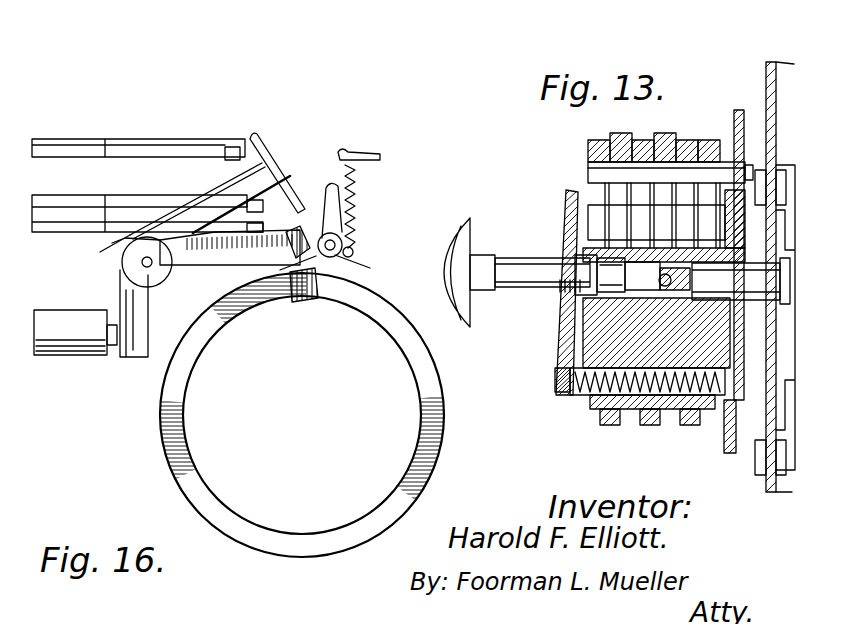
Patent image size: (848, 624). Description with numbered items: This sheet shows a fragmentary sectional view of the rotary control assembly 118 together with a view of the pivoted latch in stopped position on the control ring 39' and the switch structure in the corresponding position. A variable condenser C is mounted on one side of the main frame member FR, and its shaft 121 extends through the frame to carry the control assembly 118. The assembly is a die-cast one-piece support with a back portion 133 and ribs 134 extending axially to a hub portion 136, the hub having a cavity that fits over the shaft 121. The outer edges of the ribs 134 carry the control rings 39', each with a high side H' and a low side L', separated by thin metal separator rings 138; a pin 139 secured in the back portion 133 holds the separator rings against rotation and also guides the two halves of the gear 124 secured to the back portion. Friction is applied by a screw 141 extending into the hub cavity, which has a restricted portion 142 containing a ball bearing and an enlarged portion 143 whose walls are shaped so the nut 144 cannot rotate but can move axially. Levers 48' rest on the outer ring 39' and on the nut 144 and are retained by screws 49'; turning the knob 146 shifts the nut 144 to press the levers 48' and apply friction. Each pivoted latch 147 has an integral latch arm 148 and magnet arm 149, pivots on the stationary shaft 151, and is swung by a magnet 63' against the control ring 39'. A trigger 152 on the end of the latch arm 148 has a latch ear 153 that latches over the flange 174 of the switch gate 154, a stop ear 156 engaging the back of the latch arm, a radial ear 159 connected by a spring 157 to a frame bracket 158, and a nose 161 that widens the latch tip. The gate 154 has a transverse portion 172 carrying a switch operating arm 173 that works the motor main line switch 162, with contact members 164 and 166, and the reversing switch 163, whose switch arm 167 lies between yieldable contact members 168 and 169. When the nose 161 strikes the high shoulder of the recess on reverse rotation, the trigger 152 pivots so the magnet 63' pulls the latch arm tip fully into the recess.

In FIG. 16, the motor main line switch 162 is at (68, 134).
In FIG. 16, the contact member 164 is at (158, 140).
In FIG. 16, the reversing switch 163 is at (30, 201).
In FIG. 16, the contact member 166 is at (138, 160).
In FIG. 16, the switch gate 154 is at (205, 186).
In FIG. 16, the yieldable contact member 168 is at (195, 214).
In FIG. 16, the transverse portion 172 is at (254, 160).
In FIG. 16, the switch operating arm 173 is at (262, 176).
In FIG. 16, the flange 174 is at (300, 195).
In FIG. 16, the stationary shaft 151 is at (140, 265).
In FIG. 16, the magnet arm 149 is at (132, 358).
In FIG. 16, the magnet 63' is at (75, 357).
In FIG. 16, the pivoted latch 147 is at (176, 275).
In FIG. 16, the latch arm 148 is at (235, 258).
In FIG. 16, the yieldable contact member 169 is at (218, 236).
In FIG. 16, the stop ear 156 is at (293, 282).
In FIG. 16, the nose 161 is at (316, 284).
In FIG. 16, the switch arm 167 is at (330, 218).
In FIG. 16, the trigger 152 is at (364, 243).
In FIG. 16, the radial ear 159 is at (342, 256).
In FIG. 16, the spring 157 is at (356, 200).
In FIG. 16, the latch ear 153 is at (356, 160).
In FIG. 16, the frame bracket 158 is at (378, 160).
In FIG. 16, the control ring 39' is at (319, 415).
In FIG. 13, the control ring 39' is at (571, 131).
In FIG. 16, the low side L' is at (146, 480).
In FIG. 16, the high side H' is at (362, 571).
In FIG. 13, the separator ring 138 is at (638, 139).
In FIG. 13, the rotary control assembly 118 is at (674, 132).
In FIG. 13, the pin 139 is at (588, 164).
In FIG. 13, the hub portion 136 is at (630, 262).
In FIG. 13, the lever 48' is at (531, 288).
In FIG. 13, the back portion 133 is at (730, 160).
In FIG. 13, the knob 146 is at (466, 242).
In FIG. 13, the screw 141 is at (525, 252).
In FIG. 13, the nut 144 is at (586, 290).
In FIG. 13, the enlarged portion 143 is at (640, 300).
In FIG. 13, the shaft 121 is at (741, 281).
In FIG. 13, the restricted portion 142 is at (568, 372).
In FIG. 13, the screw 49' is at (537, 395).
In FIG. 13, the rib 134 is at (632, 410).
In FIG. 13, the gear 124 is at (726, 435).
In FIG. 13, the main frame member FR is at (774, 56).
In FIG. 13, the variable condenser C is at (796, 176).